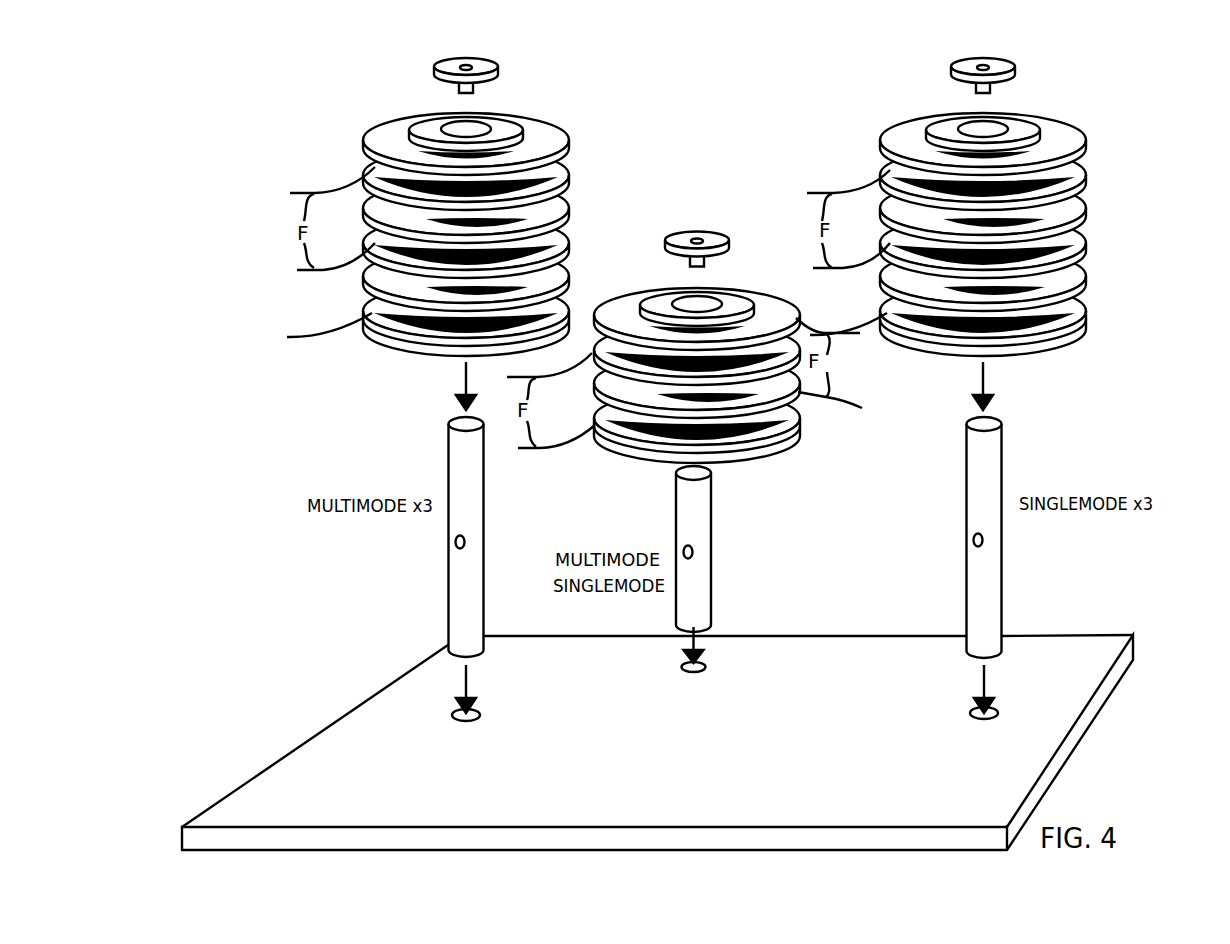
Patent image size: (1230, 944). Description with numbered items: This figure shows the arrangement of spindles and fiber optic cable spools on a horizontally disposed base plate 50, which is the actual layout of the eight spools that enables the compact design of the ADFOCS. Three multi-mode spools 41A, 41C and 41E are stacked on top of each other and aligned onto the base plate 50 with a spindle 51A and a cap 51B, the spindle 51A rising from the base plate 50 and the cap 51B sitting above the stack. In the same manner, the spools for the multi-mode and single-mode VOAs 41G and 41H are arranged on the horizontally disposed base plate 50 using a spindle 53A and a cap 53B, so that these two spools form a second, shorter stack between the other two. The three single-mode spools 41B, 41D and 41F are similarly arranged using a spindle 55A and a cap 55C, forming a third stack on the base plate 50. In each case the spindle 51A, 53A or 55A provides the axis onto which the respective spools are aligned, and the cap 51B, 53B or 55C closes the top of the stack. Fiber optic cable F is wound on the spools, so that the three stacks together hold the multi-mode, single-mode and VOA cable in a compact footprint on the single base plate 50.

The multi-mode spool 41A is at (570, 154).
The single-mode spool 41B is at (1088, 153).
The multi-mode spool 41C is at (567, 243).
The single-mode spool 41D is at (1085, 243).
The multi-mode spool 41E is at (364, 337).
The single-mode spool 41F is at (1067, 352).
The multi-mode VOA spool 41G is at (597, 370).
The single-mode VOA spool 41H is at (610, 450).
The spindle 51A is at (484, 525).
The cap 51B is at (499, 68).
The spindle 53A is at (712, 540).
The cap 53B is at (730, 241).
The spindle 55A is at (1002, 452).
The cap 55C is at (1016, 68).
The base plate 50 is at (1098, 642).